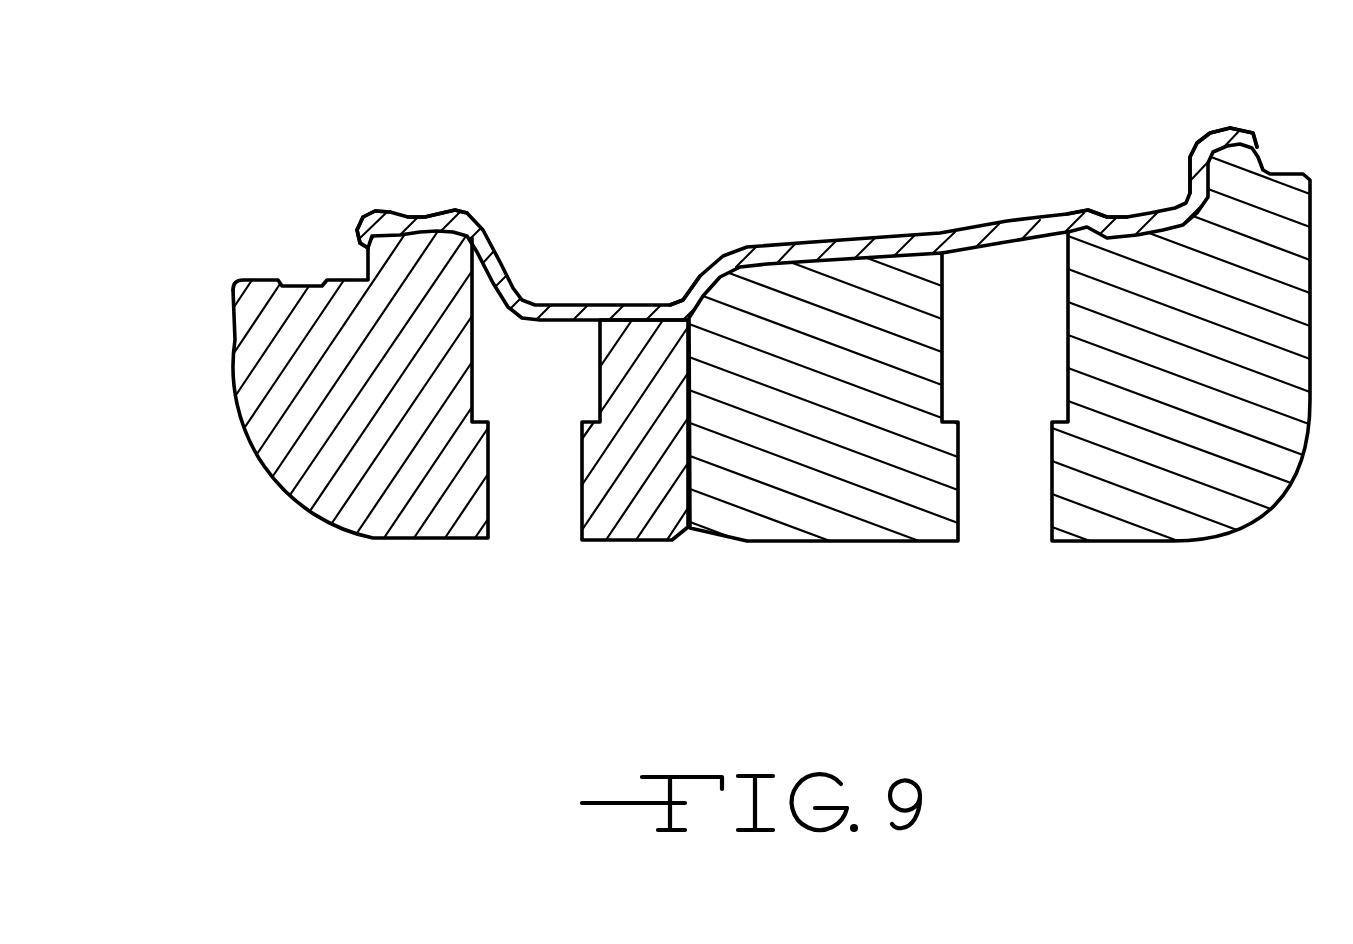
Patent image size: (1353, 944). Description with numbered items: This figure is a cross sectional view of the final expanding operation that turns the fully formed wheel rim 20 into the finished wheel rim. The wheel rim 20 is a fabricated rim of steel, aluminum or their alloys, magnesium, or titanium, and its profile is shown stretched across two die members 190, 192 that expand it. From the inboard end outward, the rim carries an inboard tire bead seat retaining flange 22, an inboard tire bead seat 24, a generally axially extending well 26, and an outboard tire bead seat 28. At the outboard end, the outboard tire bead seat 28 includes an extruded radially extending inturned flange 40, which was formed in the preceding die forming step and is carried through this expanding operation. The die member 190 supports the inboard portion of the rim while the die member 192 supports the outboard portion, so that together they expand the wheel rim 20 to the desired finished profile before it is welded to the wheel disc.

The wheel rim 20 is at (839, 226).
The inboard tire bead seat retaining flange 22 is at (1188, 157).
The inboard tire bead seat 24 is at (1133, 214).
The well 26 is at (670, 300).
The outboard tire bead seat 28 is at (427, 216).
The inturned flange 40 is at (333, 229).
The die member 190 is at (1127, 512).
The die member 192 is at (357, 515).